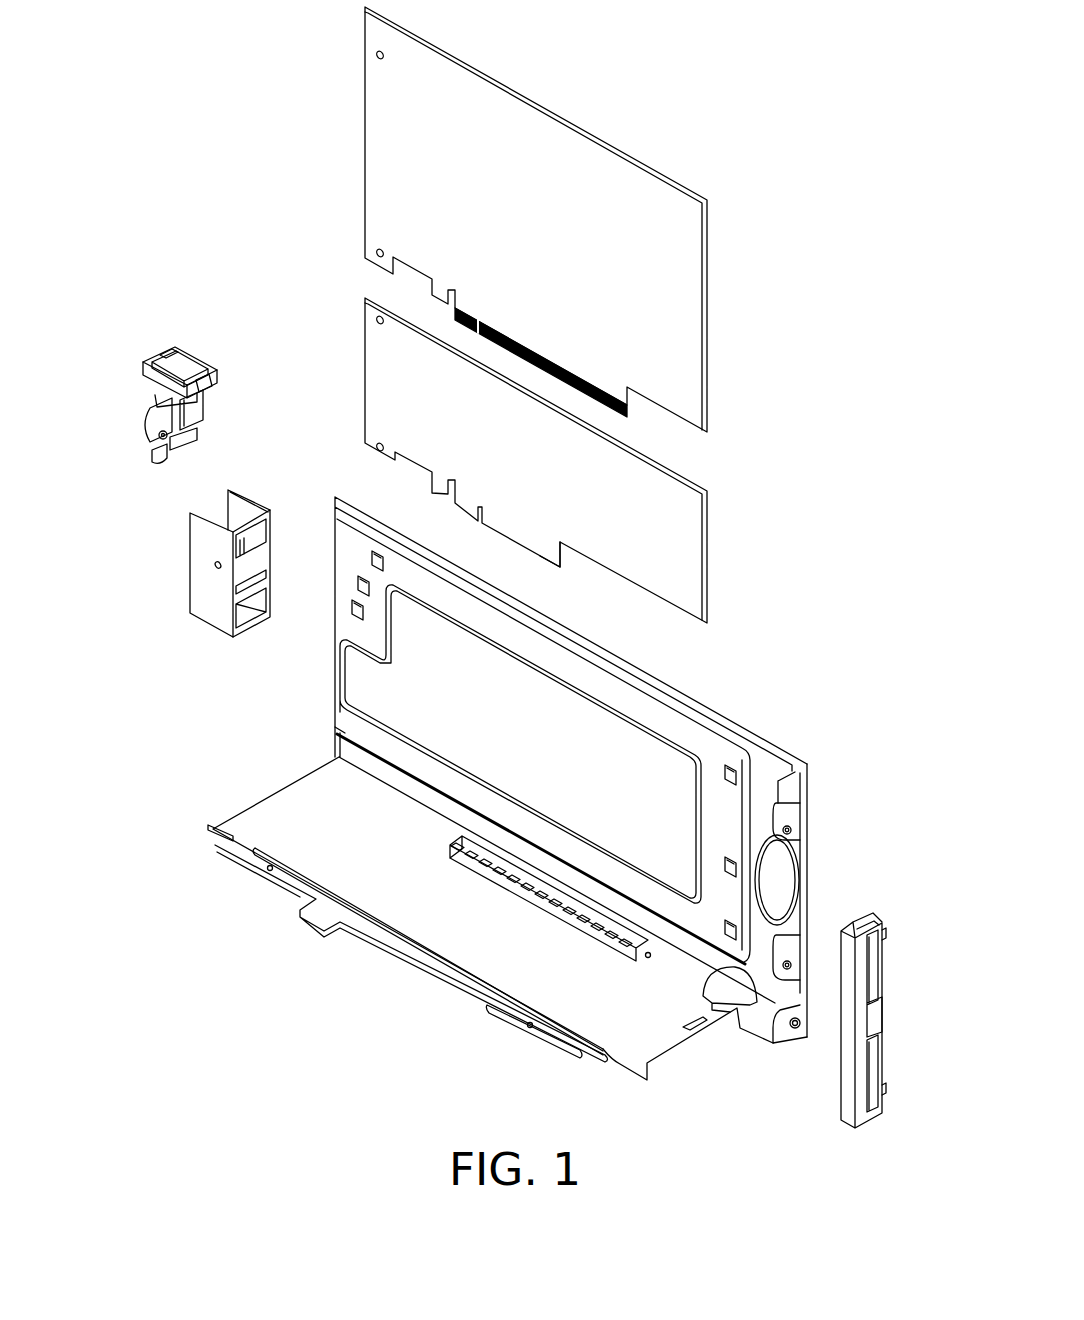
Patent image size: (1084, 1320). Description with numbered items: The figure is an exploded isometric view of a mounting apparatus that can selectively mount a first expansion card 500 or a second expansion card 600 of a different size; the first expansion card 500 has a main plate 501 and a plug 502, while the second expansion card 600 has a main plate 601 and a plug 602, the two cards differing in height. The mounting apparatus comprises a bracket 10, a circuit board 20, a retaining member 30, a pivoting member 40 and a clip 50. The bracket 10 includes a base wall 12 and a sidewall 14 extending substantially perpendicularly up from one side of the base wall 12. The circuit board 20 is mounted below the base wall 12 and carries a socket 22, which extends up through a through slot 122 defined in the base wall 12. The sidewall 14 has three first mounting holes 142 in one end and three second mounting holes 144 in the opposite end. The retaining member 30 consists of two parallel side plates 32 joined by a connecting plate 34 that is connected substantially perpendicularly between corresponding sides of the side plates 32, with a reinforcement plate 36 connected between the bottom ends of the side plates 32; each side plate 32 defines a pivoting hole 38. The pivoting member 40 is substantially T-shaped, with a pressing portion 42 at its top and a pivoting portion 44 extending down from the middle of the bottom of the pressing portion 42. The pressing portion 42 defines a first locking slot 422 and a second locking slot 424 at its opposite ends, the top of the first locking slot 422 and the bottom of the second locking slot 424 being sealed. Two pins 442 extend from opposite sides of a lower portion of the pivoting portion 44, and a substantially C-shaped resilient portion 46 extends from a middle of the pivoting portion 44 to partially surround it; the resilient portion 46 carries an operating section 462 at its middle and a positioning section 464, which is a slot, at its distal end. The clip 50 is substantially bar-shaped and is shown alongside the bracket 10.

The bracket 10 is at (527, 805).
The base wall 12 is at (272, 822).
The sidewall 14 is at (348, 593).
The circuit board 20 is at (408, 958).
The socket 22 is at (517, 890).
The retaining member 30 is at (236, 556).
The side plate 32 is at (240, 503).
The connecting plate 34 is at (260, 550).
The reinforcement plate 36 is at (248, 615).
The pivoting hole 38 is at (213, 567).
The pivoting member 40 is at (182, 414).
The pressing portion 42 is at (148, 368).
The pivoting portion 44 is at (168, 417).
The resilient portion 46 is at (158, 407).
The clip 50 is at (870, 917).
The through slot 122 is at (648, 957).
The first mounting holes 142 is at (356, 606).
The second mounting holes 144 is at (737, 770).
The first locking slot 422 is at (215, 390).
The second locking slot 424 is at (162, 356).
The pins 442 is at (170, 455).
The operating section 462 is at (142, 433).
The positioning section 464 is at (157, 457).
The first expansion card 500 is at (580, 236).
The main plate 501 is at (687, 258).
The plug 502 is at (630, 398).
The second expansion card 600 is at (586, 460).
The main plate 601 is at (685, 563).
The plug 602 is at (558, 560).